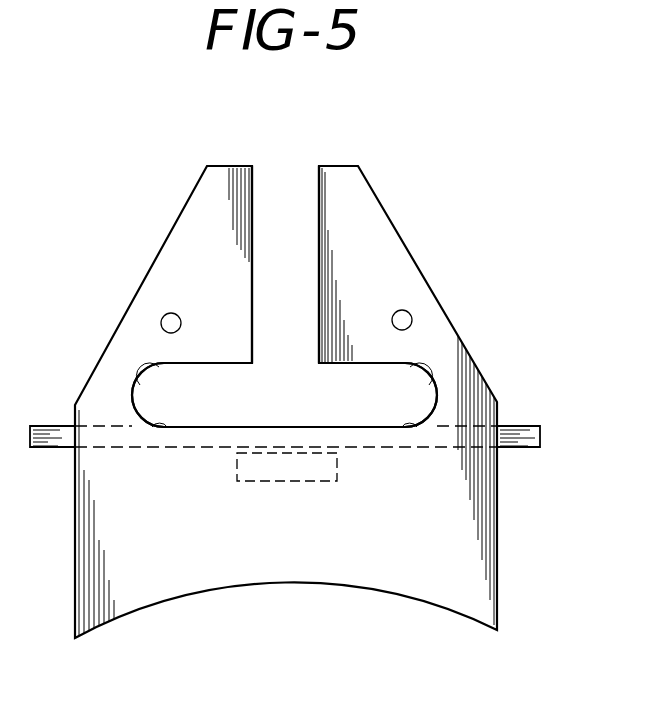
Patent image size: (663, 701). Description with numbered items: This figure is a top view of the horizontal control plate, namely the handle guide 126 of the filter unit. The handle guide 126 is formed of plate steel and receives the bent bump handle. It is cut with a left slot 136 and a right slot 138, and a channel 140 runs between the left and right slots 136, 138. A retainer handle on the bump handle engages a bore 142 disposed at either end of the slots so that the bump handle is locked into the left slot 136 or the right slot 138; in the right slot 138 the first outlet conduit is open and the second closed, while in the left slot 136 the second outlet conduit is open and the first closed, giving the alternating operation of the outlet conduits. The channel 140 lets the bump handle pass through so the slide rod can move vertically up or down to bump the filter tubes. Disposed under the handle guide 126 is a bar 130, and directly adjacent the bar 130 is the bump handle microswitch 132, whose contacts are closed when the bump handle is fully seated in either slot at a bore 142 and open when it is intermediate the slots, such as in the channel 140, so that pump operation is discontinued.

The handle guide 126 is at (288, 575).
The bar 130 is at (527, 425).
The bump handle microswitch 132 is at (262, 458).
The left slot 136 is at (437, 384).
The right slot 138 is at (137, 384).
The channel 140 is at (318, 218).
The holes 142 is at (166, 315).